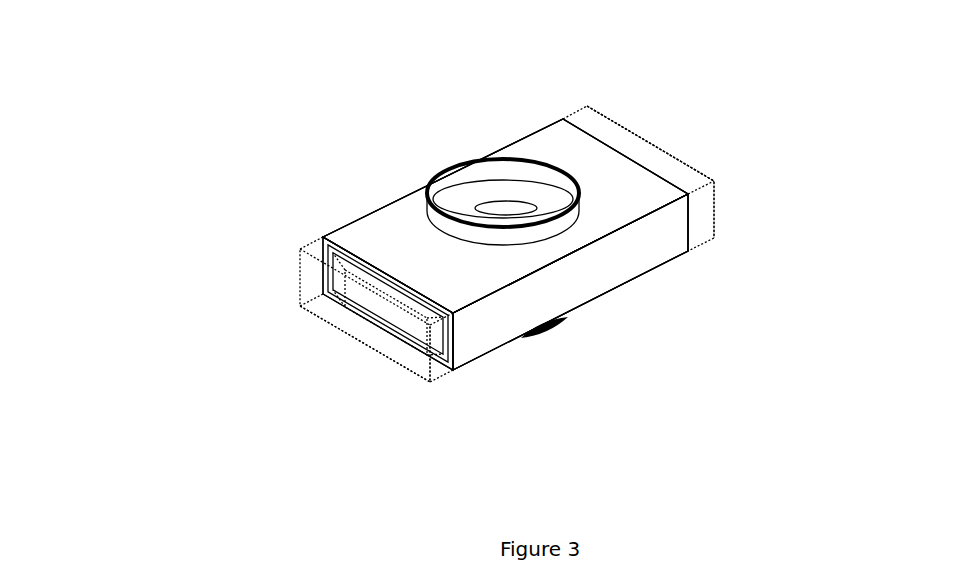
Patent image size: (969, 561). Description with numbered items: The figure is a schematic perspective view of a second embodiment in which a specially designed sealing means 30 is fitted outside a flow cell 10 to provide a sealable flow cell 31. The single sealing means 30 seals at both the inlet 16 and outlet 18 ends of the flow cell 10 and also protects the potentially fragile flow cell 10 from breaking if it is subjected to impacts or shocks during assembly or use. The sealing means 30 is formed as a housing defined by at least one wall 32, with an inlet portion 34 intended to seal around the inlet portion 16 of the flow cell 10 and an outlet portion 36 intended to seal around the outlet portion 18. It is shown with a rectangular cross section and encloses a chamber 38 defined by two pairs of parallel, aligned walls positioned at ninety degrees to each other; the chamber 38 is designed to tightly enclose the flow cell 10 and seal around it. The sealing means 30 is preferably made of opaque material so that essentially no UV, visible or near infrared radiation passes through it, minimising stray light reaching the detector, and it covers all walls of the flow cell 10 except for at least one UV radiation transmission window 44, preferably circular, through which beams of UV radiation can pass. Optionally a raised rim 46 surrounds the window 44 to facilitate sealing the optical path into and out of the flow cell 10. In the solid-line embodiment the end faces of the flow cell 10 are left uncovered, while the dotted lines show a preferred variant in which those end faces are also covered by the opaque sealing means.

The flow cell 10 is at (408, 244).
The inlet portion 16 is at (687, 131).
The outlet portion 18 is at (341, 329).
The sealing means 30 is at (604, 282).
The sealable flow cell 31 is at (389, 216).
The wall 32 is at (293, 303).
The inlet portion 34 is at (698, 172).
The outlet portion 36 is at (310, 390).
The chamber 38 is at (351, 309).
The UV radiation transmission window 44 is at (445, 153).
The raised rim 46 is at (457, 240).